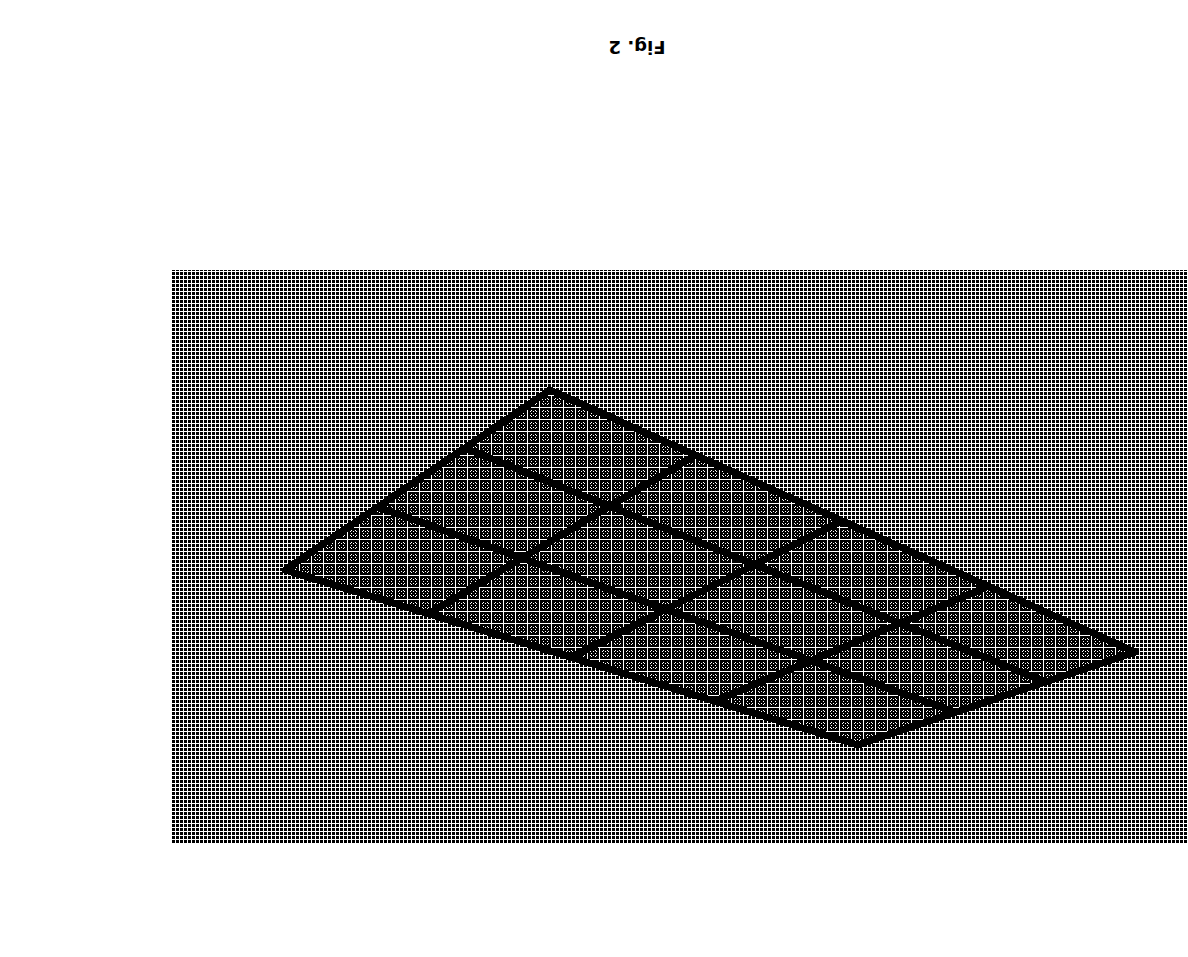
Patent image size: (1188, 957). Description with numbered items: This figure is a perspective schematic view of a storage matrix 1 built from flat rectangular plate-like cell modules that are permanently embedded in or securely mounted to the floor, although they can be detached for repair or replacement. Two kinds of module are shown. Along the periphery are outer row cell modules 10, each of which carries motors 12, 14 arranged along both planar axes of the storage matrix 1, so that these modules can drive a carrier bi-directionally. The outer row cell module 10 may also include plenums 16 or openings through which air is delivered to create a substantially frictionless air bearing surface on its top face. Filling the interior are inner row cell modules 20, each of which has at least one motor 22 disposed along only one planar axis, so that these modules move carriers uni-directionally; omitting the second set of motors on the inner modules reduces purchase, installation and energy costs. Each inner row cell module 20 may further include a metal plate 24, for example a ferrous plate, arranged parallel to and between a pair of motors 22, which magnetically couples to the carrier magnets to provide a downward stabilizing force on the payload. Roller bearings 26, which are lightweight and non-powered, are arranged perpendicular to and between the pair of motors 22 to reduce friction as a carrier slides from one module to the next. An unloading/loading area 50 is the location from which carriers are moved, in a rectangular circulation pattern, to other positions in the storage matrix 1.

The storage matrix 1 is at (646, 450).
The outer row cell module 10 is at (368, 605).
The motor 12 is at (628, 428).
The motor 14 is at (697, 470).
The plenum 16 is at (553, 400).
The inner row cell module 20 is at (385, 485).
The motor 22 is at (768, 548).
The metal plate 24 is at (540, 480).
The roller bearing 26 is at (678, 515).
The unloading/loading area 50 is at (885, 510).